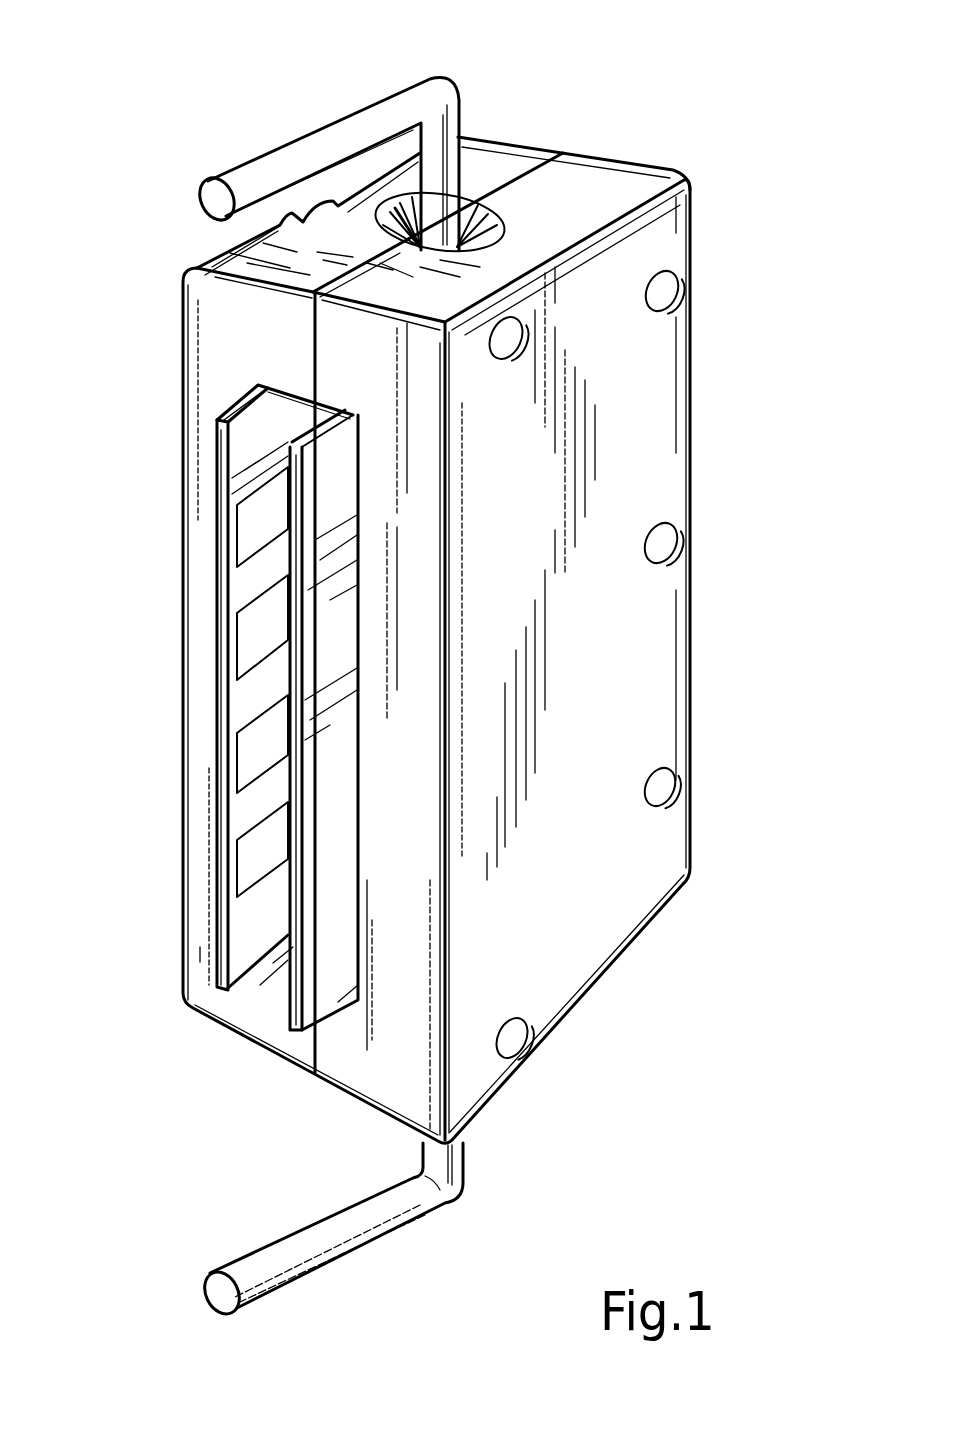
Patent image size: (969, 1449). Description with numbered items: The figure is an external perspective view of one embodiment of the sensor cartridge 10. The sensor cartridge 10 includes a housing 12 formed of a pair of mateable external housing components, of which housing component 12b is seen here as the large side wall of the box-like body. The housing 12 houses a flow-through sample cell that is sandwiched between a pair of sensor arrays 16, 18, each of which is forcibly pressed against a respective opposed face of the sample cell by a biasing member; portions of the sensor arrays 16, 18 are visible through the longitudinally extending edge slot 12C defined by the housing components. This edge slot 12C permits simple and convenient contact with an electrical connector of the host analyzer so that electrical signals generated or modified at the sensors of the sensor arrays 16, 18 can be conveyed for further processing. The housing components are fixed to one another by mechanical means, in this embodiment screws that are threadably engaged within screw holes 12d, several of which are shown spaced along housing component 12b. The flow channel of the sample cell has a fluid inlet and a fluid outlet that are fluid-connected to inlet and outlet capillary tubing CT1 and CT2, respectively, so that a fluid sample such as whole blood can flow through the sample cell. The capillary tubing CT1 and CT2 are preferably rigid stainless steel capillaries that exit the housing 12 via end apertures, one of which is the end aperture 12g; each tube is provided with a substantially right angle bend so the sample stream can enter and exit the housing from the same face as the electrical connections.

The sensor cartridge 10 is at (743, 60).
The housing 12 is at (633, 940).
The external housing component 12b is at (578, 851).
The screw holes 12d is at (523, 334).
The end aperture 12g is at (273, 213).
The edge slot 12C is at (280, 957).
The sensor array 16 is at (200, 418).
The sensor array 18 is at (328, 995).
The inlet capillary tubing CT1 is at (380, 1237).
The outlet capillary tubing CT2 is at (443, 113).